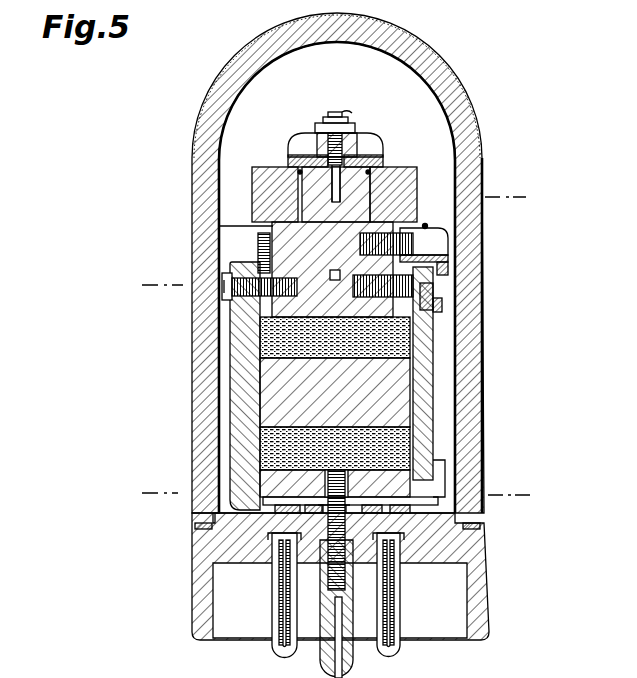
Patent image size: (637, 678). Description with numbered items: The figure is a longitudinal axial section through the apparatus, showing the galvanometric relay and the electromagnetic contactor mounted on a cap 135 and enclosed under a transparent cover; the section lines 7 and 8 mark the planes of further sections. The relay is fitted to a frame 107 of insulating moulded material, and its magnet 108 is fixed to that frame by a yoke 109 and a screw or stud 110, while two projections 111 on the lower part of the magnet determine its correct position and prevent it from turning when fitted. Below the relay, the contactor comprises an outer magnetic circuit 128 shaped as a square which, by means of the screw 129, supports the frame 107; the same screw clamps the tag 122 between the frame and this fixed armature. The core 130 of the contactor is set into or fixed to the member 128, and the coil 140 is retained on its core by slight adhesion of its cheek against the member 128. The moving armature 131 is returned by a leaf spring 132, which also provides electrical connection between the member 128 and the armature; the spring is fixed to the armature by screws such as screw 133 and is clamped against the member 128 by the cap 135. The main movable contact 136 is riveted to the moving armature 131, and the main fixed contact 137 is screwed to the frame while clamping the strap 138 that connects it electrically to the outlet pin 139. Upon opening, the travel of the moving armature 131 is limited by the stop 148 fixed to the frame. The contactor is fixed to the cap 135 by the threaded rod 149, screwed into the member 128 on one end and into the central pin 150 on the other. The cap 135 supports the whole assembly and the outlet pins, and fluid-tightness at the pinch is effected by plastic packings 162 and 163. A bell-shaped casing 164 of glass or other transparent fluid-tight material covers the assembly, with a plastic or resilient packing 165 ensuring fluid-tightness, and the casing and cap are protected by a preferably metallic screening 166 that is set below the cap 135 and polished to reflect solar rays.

The section line 7- 7 is at (330, 239).
The section line 8- 8 is at (334, 494).
The frame 107 is at (273, 225).
The magnet 108 is at (410, 172).
The yoke 109 is at (350, 147).
The screw or stud 110 is at (322, 152).
The projections 111 is at (378, 157).
The tag 122 is at (260, 238).
The outer magnetic circuit 128 is at (260, 445).
The screw 129 is at (228, 303).
The core 130 is at (235, 392).
The moving armature 131 is at (433, 392).
The leaf spring 132 is at (442, 470).
The screw 133 is at (443, 482).
The cap 135 is at (470, 552).
The main movable contact 136 is at (432, 290).
The main fixed contact 137 is at (442, 310).
The strap 138 is at (433, 330).
The outlet pin 139 is at (398, 643).
The coil 140 is at (260, 347).
The stop 148 is at (448, 262).
The threaded rod 149 is at (455, 241).
The central pin 150 is at (353, 660).
The plastic packing 162 is at (317, 537).
The plastic packing 163 is at (268, 535).
The bell-shaped casing 164 is at (417, 89).
The packing 165 is at (478, 525).
The screening 166 is at (246, 63).